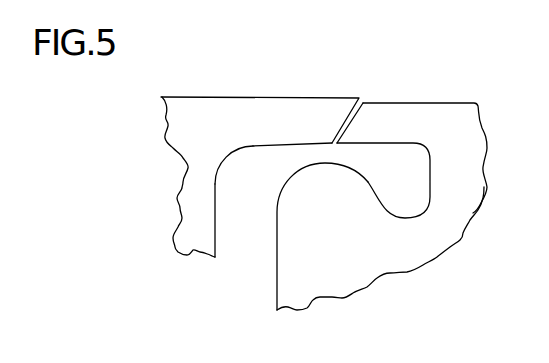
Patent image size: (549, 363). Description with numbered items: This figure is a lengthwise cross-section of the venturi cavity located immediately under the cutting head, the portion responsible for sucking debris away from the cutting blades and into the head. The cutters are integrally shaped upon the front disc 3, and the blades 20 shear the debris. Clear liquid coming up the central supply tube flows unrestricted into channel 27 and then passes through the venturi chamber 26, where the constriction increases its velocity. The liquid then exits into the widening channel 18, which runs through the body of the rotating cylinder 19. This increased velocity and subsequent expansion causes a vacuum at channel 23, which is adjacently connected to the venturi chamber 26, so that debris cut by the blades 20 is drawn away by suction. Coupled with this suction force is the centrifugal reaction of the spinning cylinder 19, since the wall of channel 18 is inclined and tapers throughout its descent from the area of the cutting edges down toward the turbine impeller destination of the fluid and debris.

The front disc 3 is at (310, 94).
The widening channel 18 is at (252, 238).
The rotating cylinder 19 is at (357, 254).
The blades 20 is at (356, 89).
The channel 23 is at (372, 89).
The venturi chamber 26 is at (305, 157).
The channel 27 is at (411, 168).